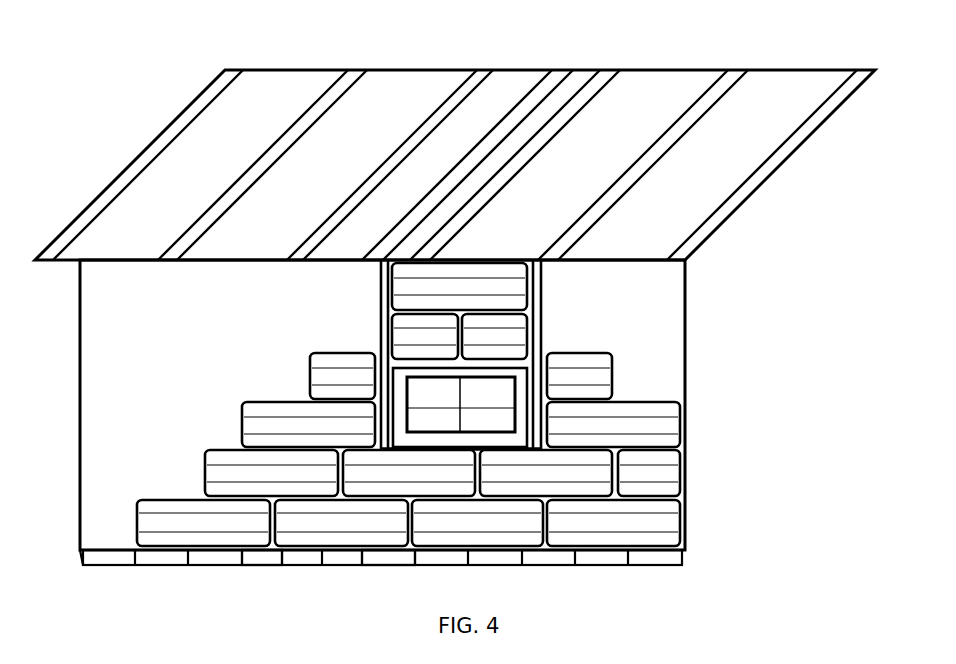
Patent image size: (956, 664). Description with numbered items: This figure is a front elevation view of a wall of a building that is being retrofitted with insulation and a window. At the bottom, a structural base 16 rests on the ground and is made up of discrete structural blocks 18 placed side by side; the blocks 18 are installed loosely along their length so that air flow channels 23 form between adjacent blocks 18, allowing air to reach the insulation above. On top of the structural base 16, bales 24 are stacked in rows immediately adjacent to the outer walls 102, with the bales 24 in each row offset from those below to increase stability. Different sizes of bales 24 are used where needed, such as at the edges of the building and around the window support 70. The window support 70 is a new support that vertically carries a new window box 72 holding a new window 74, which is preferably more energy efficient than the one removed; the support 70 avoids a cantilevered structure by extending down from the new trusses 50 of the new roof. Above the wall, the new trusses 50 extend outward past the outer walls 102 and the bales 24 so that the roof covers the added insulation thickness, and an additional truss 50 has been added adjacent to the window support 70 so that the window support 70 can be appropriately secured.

The new trusses 50 is at (234, 78).
The outer walls 102 is at (100, 355).
The window support 70 is at (531, 327).
The new window box 72 is at (531, 377).
The new window 74 is at (490, 397).
The bales 24 is at (663, 413).
The structural base 16 is at (77, 553).
The structural blocks 18 is at (207, 560).
The air flow channels 23 is at (363, 552).